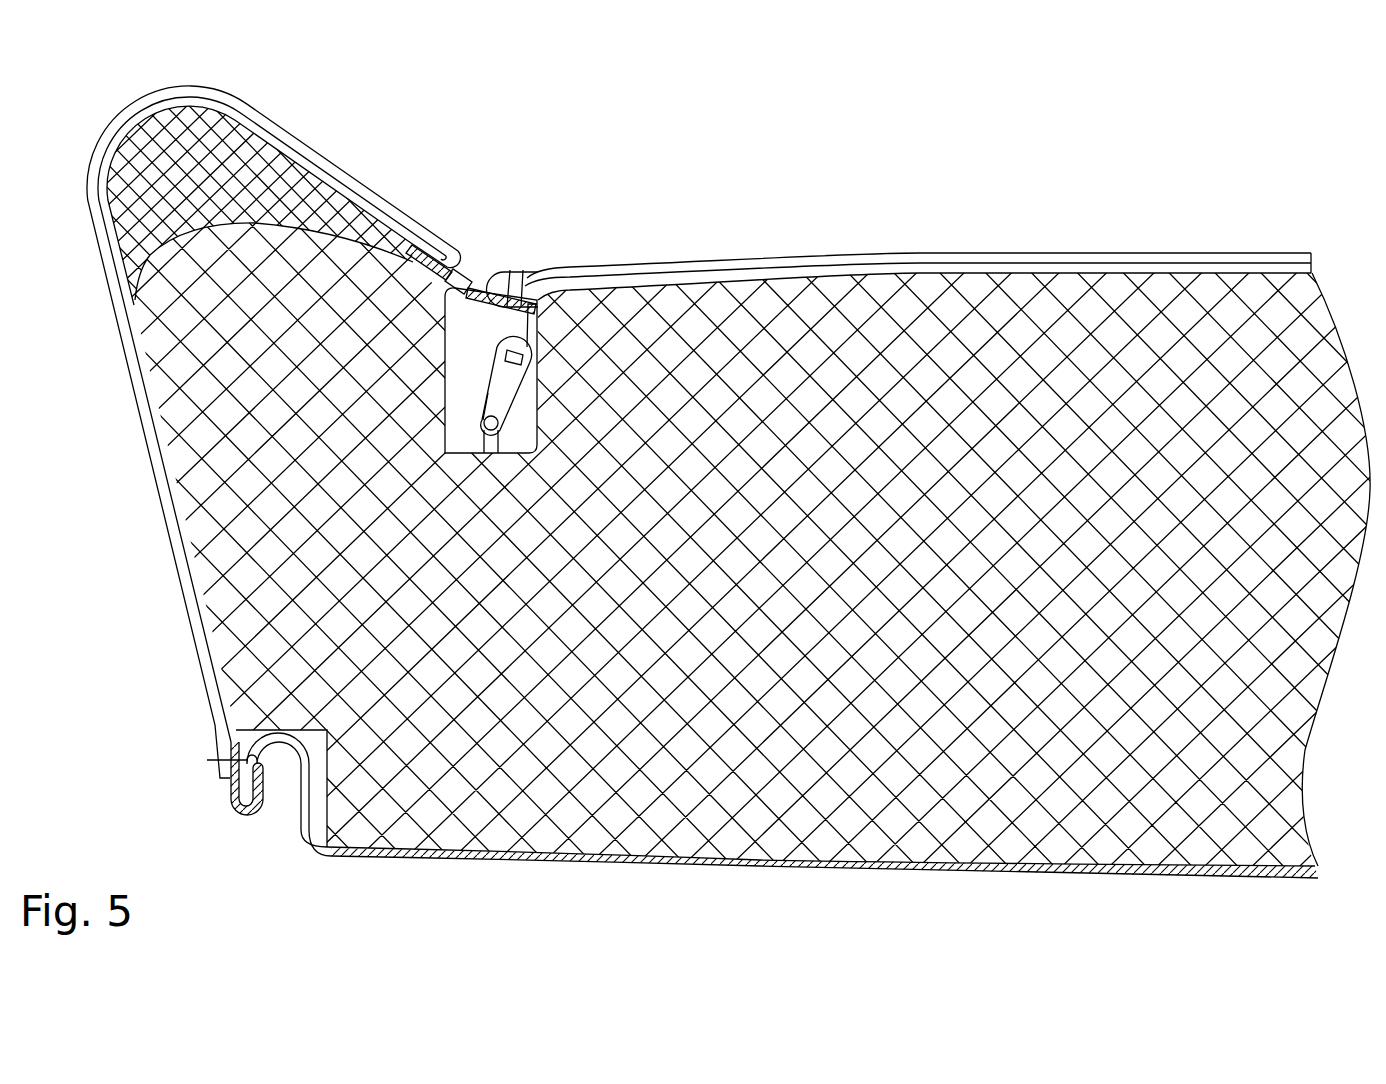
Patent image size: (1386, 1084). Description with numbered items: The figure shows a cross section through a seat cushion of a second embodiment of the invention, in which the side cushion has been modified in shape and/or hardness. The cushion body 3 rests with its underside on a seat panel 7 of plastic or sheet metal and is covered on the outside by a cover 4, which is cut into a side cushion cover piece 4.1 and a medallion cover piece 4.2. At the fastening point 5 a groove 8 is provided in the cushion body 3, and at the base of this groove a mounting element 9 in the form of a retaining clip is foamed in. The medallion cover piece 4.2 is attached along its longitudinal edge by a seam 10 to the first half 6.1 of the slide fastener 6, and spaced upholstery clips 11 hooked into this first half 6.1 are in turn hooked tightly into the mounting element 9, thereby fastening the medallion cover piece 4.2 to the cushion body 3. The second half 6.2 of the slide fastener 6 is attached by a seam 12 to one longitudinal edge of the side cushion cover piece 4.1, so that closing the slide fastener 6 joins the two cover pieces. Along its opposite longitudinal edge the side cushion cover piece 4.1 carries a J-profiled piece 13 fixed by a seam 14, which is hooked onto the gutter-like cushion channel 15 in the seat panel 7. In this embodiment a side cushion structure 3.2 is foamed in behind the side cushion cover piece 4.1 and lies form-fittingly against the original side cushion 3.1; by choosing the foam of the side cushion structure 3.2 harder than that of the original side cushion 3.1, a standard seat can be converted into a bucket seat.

The cushion body 3 is at (935, 538).
The original side cushion 3.1 is at (333, 459).
The side cushion structure 3.2 is at (314, 195).
The cover 4 is at (1313, 264).
The side cushion cover piece 4.1 is at (323, 160).
The medallion cover piece 4.2 is at (915, 252).
The fastening point 5 is at (550, 166).
The slide fastener 6 is at (485, 245).
The first half of the slide fastener 6.1 is at (500, 270).
The second half of the slide fastener 6.2 is at (463, 278).
The seat panel 7 is at (768, 866).
The groove 8 is at (482, 368).
The mounting element 9 is at (492, 448).
The seam 10 is at (522, 265).
The upholstery clip 11 is at (515, 398).
The seam 12 is at (445, 243).
The J-profiled piece 13 is at (233, 807).
The seam 14 is at (214, 757).
The cushion channel 15 is at (283, 775).